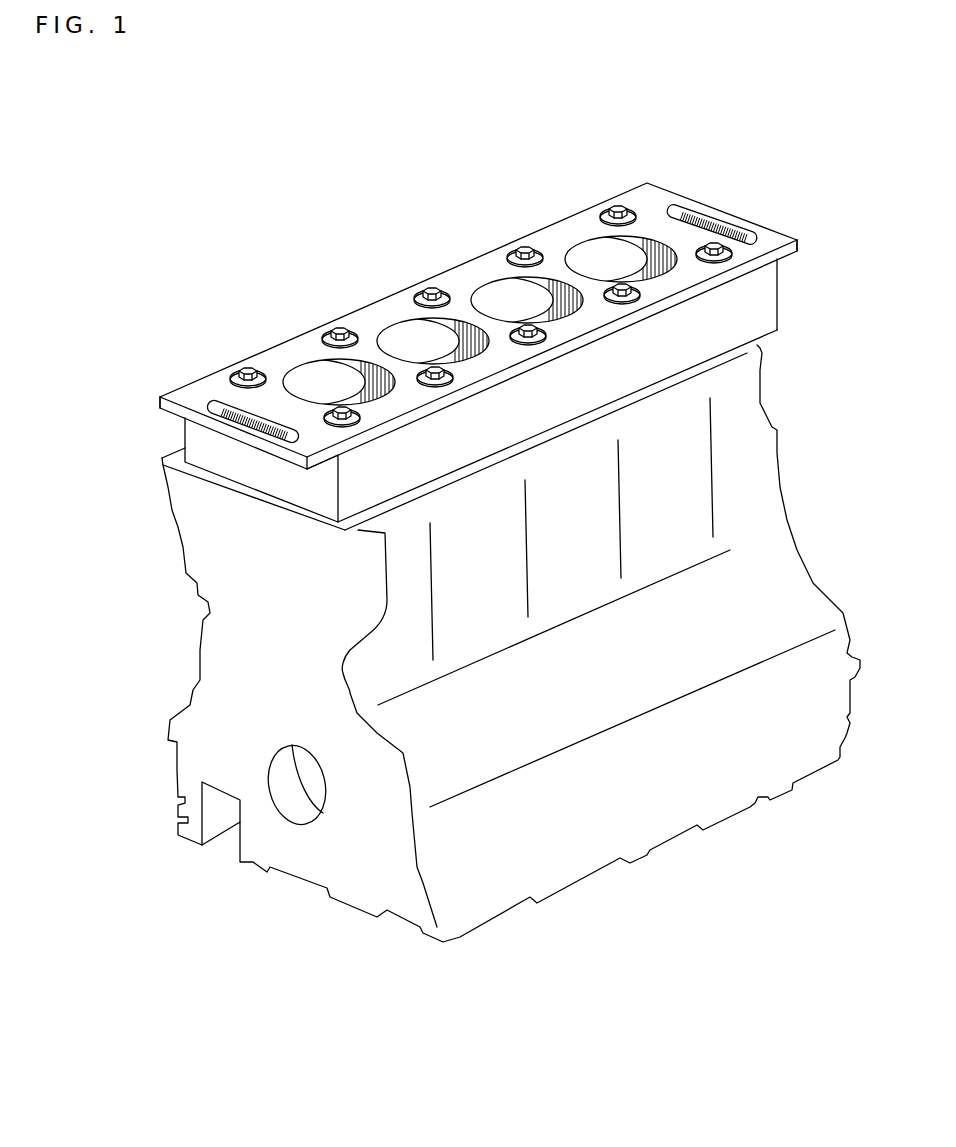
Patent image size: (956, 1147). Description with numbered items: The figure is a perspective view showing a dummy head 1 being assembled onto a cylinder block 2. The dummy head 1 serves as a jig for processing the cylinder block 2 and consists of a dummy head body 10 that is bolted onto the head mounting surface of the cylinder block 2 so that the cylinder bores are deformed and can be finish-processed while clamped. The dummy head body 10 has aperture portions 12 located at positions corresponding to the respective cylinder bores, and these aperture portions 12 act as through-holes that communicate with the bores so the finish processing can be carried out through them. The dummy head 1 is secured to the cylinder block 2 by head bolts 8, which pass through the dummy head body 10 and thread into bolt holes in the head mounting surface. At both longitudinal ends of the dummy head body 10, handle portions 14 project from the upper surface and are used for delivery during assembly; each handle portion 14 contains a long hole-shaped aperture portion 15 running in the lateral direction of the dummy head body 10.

The dummy head 1 is at (478, 281).
The cylinder block 2 is at (182, 612).
The head bolt 8 is at (247, 369).
The dummy head body 10 is at (357, 308).
The aperture portion 12 is at (310, 378).
The handle portion 14 is at (158, 406).
The long hole-shaped aperture portion 15 is at (215, 404).